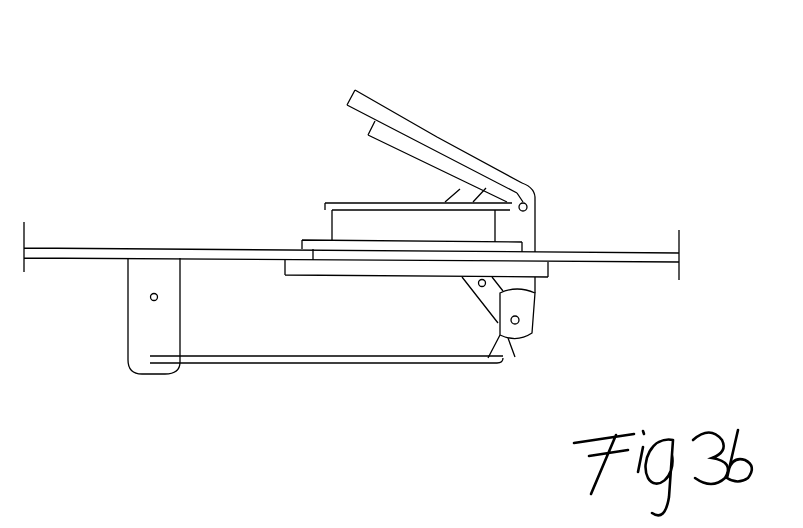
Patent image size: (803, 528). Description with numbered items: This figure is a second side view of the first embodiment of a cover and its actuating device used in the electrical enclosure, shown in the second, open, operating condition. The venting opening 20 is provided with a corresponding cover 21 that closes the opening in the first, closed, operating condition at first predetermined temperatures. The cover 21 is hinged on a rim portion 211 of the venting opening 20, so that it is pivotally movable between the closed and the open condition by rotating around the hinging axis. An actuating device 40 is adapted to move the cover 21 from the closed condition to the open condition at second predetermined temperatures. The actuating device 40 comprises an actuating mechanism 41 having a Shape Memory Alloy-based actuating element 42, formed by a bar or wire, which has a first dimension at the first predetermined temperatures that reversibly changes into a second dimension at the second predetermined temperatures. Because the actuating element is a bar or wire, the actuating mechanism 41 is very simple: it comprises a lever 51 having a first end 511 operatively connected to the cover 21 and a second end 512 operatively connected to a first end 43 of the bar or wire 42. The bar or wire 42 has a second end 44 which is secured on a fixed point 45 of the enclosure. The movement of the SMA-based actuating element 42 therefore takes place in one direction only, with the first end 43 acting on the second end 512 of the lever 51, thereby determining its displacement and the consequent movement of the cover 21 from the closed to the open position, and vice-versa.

The venting opening 20 is at (342, 197).
The cover 21 is at (378, 98).
The rim portion 211 is at (530, 200).
The actuating device 40 is at (203, 190).
The actuating mechanism 41 is at (420, 390).
The SMA-based actuating element 42 is at (303, 357).
The first end of the bar or wire 43 is at (503, 358).
The second end of the bar or wire 44 is at (155, 354).
The fixed point 45 is at (132, 321).
The lever 51 is at (498, 296).
The first end of the lever 511 is at (462, 200).
The second end of the lever 512 is at (515, 358).